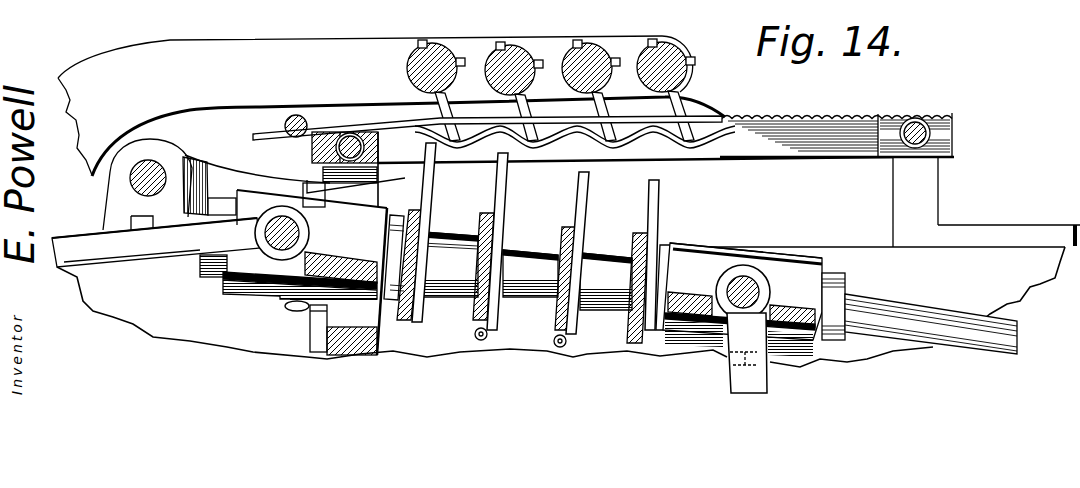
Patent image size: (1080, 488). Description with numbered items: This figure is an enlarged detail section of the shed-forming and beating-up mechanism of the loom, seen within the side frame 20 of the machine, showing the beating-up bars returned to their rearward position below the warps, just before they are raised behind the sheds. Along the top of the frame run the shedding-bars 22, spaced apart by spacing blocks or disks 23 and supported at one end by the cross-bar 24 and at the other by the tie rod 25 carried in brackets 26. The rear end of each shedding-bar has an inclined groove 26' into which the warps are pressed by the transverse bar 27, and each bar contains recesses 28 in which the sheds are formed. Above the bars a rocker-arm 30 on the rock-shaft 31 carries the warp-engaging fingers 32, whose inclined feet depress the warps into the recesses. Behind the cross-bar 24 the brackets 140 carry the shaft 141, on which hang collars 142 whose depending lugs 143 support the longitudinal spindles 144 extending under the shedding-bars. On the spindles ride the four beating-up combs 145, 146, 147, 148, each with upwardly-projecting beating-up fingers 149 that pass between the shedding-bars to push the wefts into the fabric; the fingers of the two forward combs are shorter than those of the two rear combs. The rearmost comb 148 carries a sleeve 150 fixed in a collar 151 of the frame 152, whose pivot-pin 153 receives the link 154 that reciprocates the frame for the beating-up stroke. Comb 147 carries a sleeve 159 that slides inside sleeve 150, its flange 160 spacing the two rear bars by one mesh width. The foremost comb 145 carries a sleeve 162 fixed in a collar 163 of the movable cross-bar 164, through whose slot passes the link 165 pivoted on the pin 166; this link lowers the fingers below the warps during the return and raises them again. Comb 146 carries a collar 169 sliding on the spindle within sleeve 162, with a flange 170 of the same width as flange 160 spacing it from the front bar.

The frame 20 is at (137, 322).
The shedding-bar 22 is at (773, 153).
The spacing block 23 is at (294, 154).
The cross-bar 24 is at (333, 359).
The tie rod 25 is at (917, 124).
The bracket 26 is at (729, 201).
The inclined groove 26' is at (342, 122).
The transversely-disposed bar 27 is at (295, 114).
The recess 28 is at (463, 148).
The rocker-arm 30 is at (248, 42).
The rock-shaft 31 is at (504, 40).
The warp-engaging finger 32 is at (440, 112).
The bracket 140 is at (207, 150).
The shaft 141 is at (132, 178).
The collar 142 is at (110, 205).
The depending lug 143 is at (163, 257).
The spindle 144 is at (530, 273).
The beating-up comb 145 is at (632, 350).
The beating-up comb 146 is at (558, 347).
The beating-up comb 147 is at (477, 341).
The beating-up comb 148 is at (401, 322).
The beating-up finger 149 is at (658, 199).
The sleeve 150 is at (392, 231).
The collar 151 is at (372, 210).
The frame 152 is at (277, 294).
The pivot-pin 153 is at (262, 235).
The link 154 is at (156, 242).
The sleeve 159 is at (450, 264).
The flange 160 is at (467, 249).
The sleeve 162 is at (661, 277).
The collar 163 is at (742, 300).
The cross-bar 164 is at (797, 360).
The link 165 is at (730, 383).
The pin 166 is at (757, 280).
The collar 169 is at (606, 281).
The flange 170 is at (567, 334).